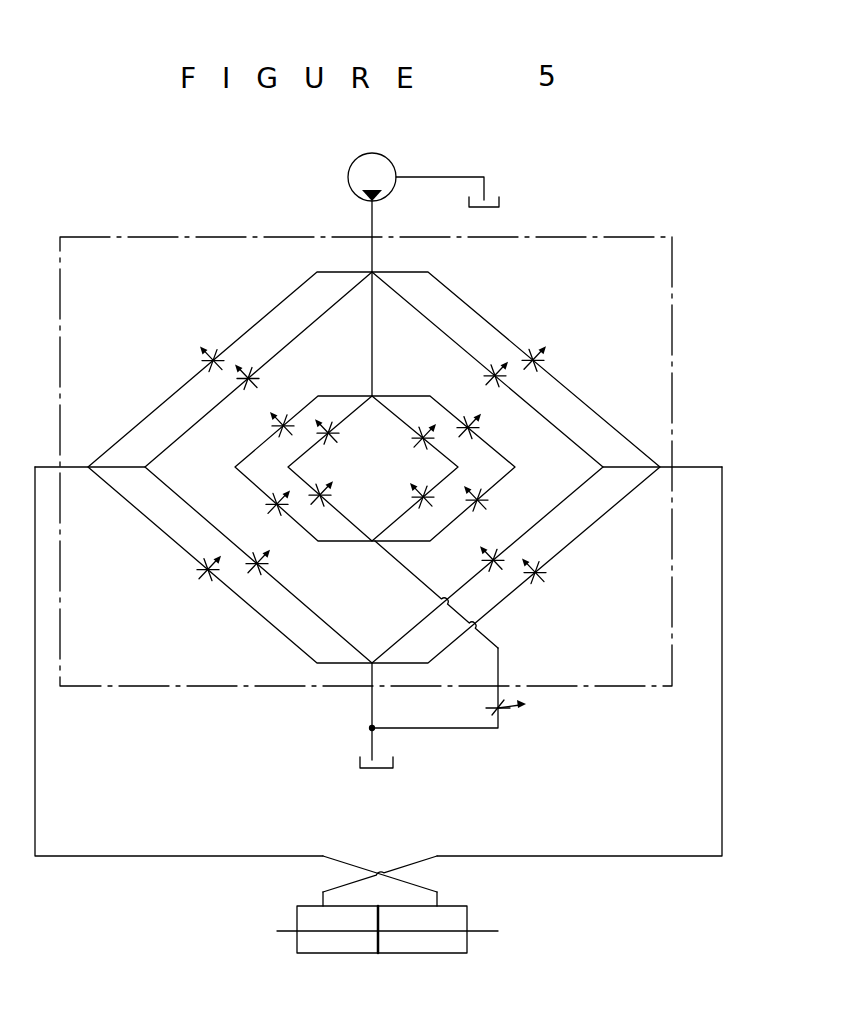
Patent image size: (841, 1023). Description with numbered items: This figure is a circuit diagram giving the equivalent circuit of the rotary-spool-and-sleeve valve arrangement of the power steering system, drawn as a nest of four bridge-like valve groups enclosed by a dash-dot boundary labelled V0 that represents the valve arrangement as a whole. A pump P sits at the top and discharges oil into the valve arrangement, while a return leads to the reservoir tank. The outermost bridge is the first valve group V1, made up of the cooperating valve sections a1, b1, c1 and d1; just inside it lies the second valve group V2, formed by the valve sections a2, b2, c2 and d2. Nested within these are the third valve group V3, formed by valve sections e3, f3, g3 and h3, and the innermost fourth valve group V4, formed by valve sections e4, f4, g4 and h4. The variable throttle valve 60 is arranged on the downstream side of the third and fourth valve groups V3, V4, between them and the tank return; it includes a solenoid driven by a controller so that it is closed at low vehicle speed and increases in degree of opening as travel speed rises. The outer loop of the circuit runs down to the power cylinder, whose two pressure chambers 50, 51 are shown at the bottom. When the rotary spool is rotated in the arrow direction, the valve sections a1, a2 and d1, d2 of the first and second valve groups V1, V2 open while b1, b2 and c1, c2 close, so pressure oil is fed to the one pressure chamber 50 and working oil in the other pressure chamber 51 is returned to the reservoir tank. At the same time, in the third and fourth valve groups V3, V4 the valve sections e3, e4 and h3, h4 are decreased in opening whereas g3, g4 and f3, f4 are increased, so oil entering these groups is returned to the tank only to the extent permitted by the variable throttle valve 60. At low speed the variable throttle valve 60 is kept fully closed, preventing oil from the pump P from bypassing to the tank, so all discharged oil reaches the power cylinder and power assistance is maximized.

The pump P is at (388, 158).
The valve assembly V0 is at (99, 230).
The first valve group V1 is at (484, 312).
The second valve group V2 is at (432, 312).
The third valve group V3 is at (440, 398).
The fourth valve group V4 is at (395, 408).
The valve section a1 is at (547, 359).
The valve section a2 is at (492, 363).
The valve section b1 is at (208, 346).
The valve section b2 is at (248, 366).
The valve section c1 is at (534, 588).
The valve section c2 is at (491, 575).
The valve section d1 is at (208, 585).
The valve section d2 is at (258, 578).
The valve section e3 is at (283, 410).
The valve section e4 is at (336, 435).
The valve section f3 is at (479, 429).
The valve section f4 is at (414, 440).
The valve section g3 is at (259, 501).
The valve section g4 is at (330, 490).
The valve section h3 is at (488, 502).
The valve section h4 is at (407, 498).
The variable throttle valve 60 is at (512, 714).
The pressure chamber 50 is at (347, 947).
The pressure chamber 51 is at (425, 947).